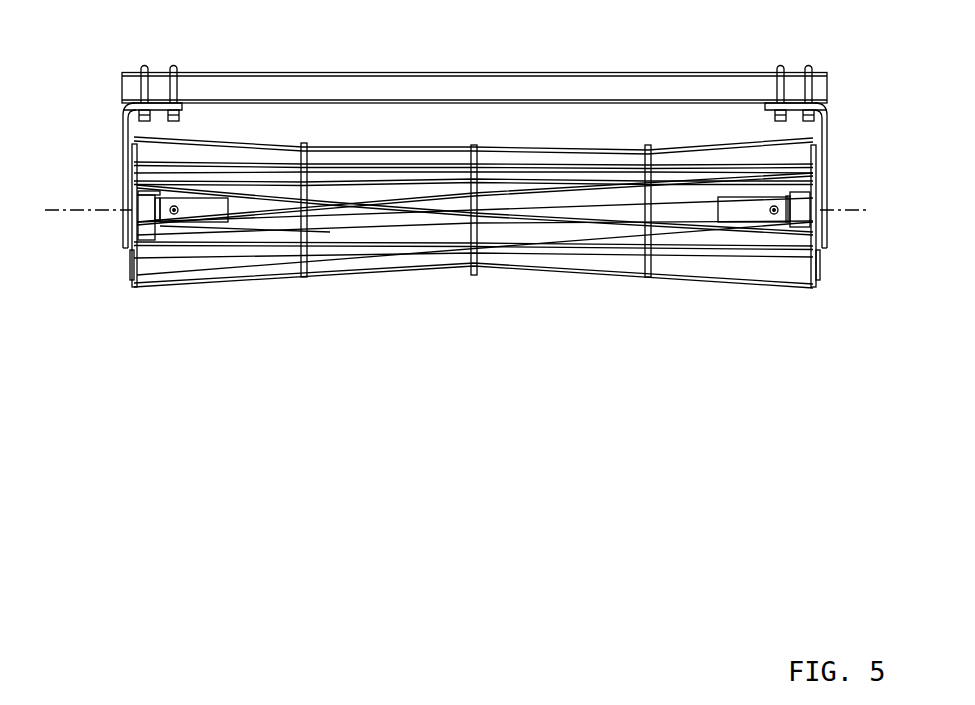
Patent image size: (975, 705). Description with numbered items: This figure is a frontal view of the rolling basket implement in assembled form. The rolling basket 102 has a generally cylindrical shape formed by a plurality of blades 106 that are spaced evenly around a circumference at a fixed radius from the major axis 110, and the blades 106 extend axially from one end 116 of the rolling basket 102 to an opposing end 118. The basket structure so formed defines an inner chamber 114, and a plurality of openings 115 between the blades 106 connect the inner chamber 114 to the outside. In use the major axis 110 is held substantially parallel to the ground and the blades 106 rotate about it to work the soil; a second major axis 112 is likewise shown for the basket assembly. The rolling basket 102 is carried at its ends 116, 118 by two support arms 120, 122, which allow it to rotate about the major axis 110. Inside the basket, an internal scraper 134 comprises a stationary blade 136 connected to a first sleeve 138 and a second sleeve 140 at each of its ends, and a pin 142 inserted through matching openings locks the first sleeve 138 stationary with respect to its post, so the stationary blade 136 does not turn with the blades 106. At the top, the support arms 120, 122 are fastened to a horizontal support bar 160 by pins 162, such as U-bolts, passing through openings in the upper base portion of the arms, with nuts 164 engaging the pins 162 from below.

The rolling basket 102 is at (217, 292).
The blades 106 is at (270, 278).
The major axis 110 is at (52, 212).
The major axis 112 is at (868, 212).
The inner chamber 114 is at (462, 232).
The openings 115 is at (687, 248).
The end 116 is at (130, 253).
The opposing end 118 is at (820, 258).
The support arm 120 is at (120, 133).
The support arm 122 is at (827, 143).
The internal scraper 134 is at (332, 175).
The stationary blade 136 is at (365, 182).
The first sleeve 138 is at (232, 208).
The second sleeve 140 is at (745, 213).
The pin 142 is at (175, 215).
The support bar 160 is at (308, 80).
The pins 162 is at (172, 65).
The nuts 164 is at (182, 112).